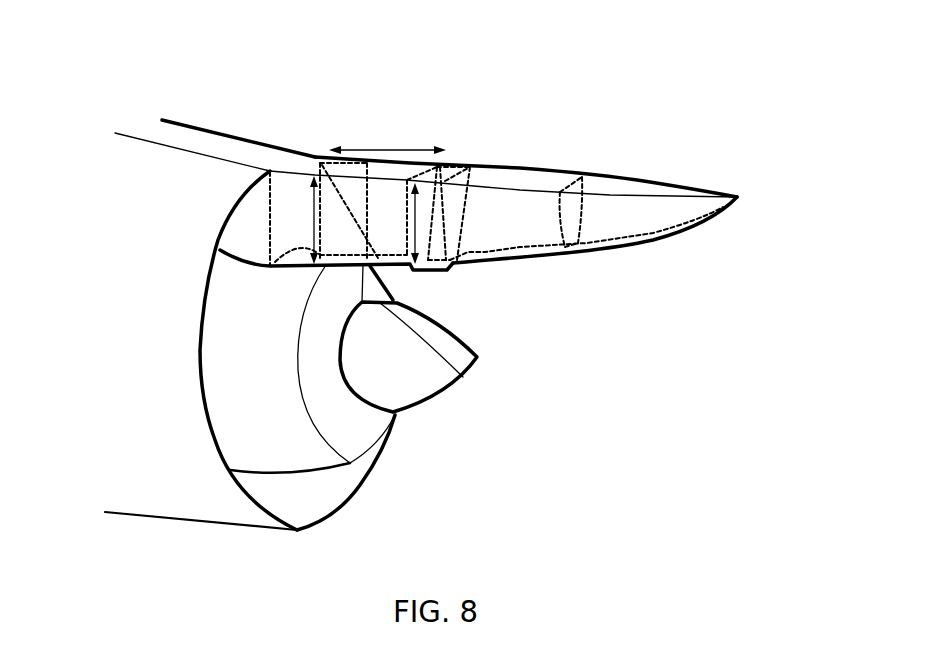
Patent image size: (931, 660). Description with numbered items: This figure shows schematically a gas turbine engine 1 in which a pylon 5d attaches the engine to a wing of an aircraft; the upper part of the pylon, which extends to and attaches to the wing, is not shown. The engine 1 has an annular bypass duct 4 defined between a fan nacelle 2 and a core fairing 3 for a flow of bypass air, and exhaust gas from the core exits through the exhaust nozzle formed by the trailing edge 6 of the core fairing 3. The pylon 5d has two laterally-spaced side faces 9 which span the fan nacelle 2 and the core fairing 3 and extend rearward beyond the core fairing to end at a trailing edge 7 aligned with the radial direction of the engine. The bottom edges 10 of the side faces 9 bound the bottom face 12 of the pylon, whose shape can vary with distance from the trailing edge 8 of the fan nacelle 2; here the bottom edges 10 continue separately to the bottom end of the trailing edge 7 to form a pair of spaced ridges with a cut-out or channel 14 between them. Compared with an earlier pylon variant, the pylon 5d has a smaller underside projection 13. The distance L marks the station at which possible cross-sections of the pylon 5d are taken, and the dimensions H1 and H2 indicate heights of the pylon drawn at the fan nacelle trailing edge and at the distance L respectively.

The gas turbine engine 1 is at (204, 84).
The fan nacelle 2 is at (175, 485).
The core fairing 3 is at (295, 462).
The annular bypass duct 4 is at (247, 382).
The pylon 5d is at (582, 158).
The trailing edge of the core fairing 6 is at (340, 453).
The trailing edge of the pylon 7 is at (720, 213).
The trailing edge of the fan nacelle 8 is at (233, 207).
The side faces 9 is at (660, 220).
The bottom edges 10 is at (463, 377).
The bottom face of the pylon 12 is at (345, 264).
The underside projection 13 is at (420, 270).
The cut-out or channel 14 is at (527, 255).
The height H1 is at (313, 213).
The height H2 is at (414, 219).
The distance L is at (403, 148).